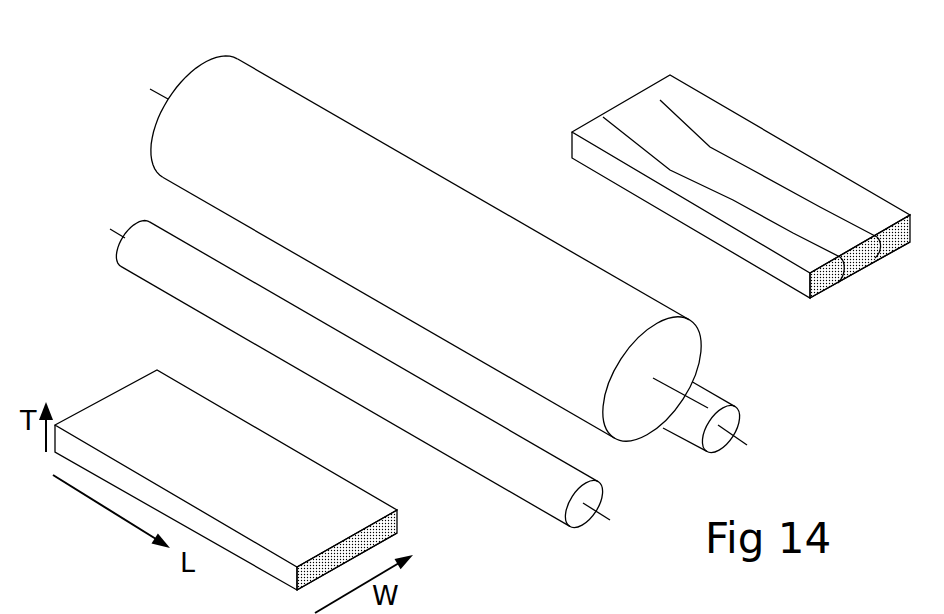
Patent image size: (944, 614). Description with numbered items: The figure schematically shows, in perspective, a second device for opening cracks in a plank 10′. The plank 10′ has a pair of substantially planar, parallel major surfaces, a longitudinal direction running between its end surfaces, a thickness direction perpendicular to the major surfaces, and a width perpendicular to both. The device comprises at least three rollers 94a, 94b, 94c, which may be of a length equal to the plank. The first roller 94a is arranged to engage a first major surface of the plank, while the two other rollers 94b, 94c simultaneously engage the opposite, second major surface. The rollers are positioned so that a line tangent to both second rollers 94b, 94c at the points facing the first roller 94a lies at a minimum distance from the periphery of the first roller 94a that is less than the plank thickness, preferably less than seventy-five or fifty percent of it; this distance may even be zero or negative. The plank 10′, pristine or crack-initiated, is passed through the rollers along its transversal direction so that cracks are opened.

The first roller 94a is at (294, 115).
The second roller 94b is at (142, 240).
The second roller 94c is at (727, 418).
The plank 10′ is at (103, 425).